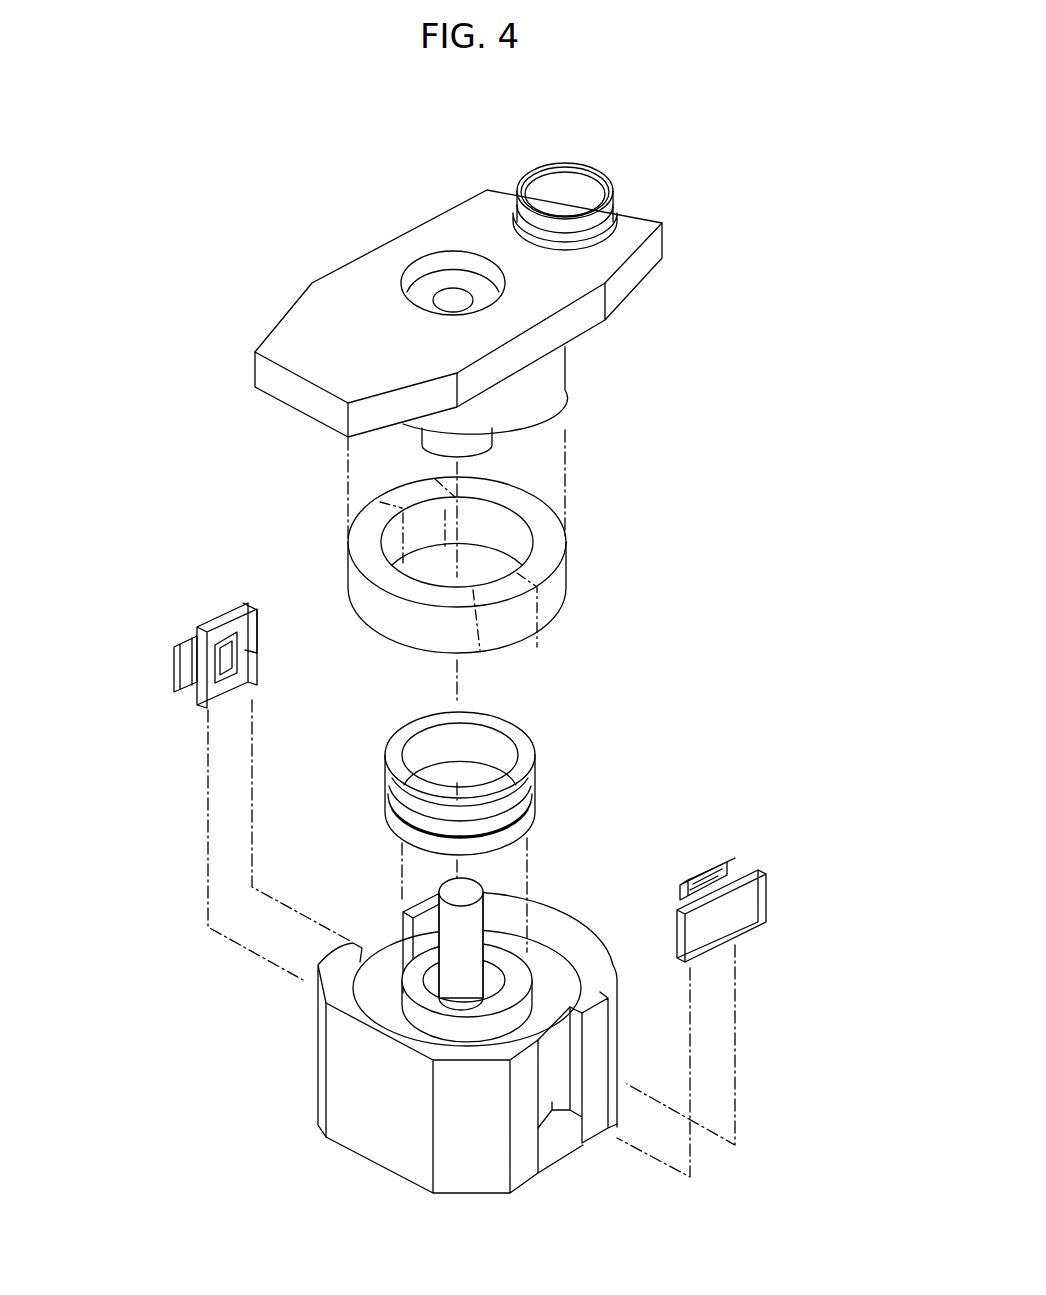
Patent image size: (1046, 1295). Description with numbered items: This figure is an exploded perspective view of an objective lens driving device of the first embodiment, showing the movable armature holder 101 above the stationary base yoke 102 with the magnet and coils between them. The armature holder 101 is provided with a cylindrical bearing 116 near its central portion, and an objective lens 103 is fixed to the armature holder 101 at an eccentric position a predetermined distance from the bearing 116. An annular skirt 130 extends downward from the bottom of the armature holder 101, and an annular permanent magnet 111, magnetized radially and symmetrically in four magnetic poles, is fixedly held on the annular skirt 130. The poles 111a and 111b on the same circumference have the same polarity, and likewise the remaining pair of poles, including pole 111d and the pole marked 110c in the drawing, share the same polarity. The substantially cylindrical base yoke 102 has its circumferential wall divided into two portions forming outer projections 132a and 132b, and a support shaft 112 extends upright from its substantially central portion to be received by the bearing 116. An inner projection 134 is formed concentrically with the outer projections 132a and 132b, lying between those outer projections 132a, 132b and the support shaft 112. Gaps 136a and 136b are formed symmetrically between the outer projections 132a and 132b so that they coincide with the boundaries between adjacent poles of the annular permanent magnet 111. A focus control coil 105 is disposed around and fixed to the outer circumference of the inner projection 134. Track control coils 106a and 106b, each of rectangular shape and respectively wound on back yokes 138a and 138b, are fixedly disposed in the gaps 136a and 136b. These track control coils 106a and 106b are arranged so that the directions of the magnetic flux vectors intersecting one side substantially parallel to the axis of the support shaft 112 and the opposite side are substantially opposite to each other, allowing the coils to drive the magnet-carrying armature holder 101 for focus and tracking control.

The armature holder 101 is at (635, 273).
The base yoke 102 is at (460, 996).
The objective lens 103 is at (603, 177).
The focus control coil 105 is at (527, 755).
The track control coil 106a is at (223, 613).
The track control coil 106b is at (713, 862).
The magnet pole portion 110c is at (393, 490).
The annular permanent magnet 111 is at (472, 574).
The pole 111a is at (388, 622).
The pole 111b is at (562, 590).
The pole 111d is at (527, 627).
The support shaft 112 is at (473, 892).
The cylindrical bearing 116 is at (475, 445).
The annular skirt 130 is at (540, 378).
The outer projection 132a is at (333, 985).
The outer projection 132b is at (590, 955).
The inner projection 134 is at (503, 957).
The gap 136a is at (405, 938).
The gap 136b is at (575, 1045).
The back yoke 138a is at (180, 642).
The back yoke 138b is at (740, 905).